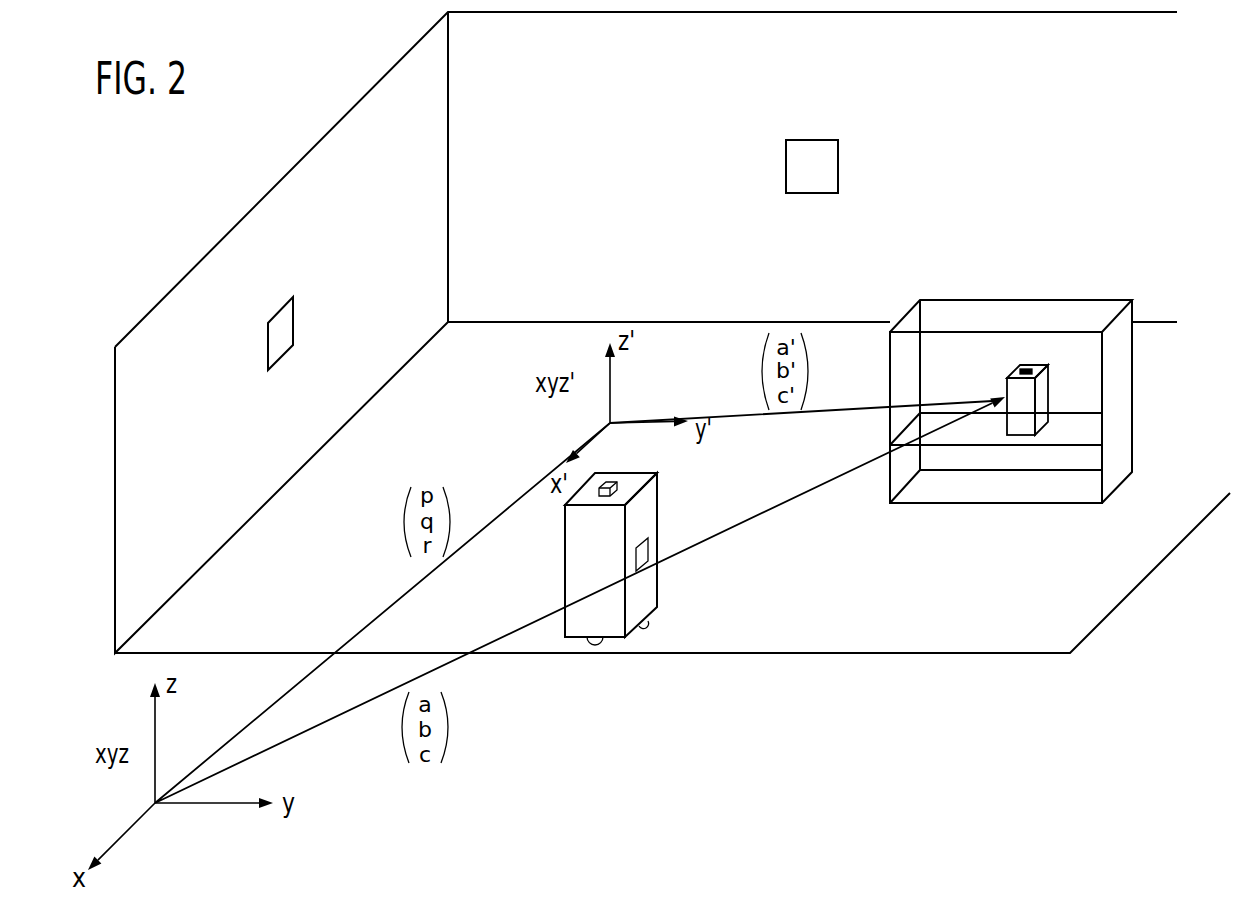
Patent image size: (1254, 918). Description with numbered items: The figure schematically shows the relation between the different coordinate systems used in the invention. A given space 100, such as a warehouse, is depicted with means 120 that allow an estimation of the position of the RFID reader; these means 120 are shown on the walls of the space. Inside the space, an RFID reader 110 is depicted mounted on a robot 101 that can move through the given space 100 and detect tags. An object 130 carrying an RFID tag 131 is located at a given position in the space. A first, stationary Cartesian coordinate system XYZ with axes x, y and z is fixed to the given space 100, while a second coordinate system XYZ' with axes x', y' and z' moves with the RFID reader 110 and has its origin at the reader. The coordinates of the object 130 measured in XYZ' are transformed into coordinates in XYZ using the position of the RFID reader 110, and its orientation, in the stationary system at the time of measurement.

The given space 100 is at (154, 240).
The robot 101 is at (652, 505).
The RFID reader 110 is at (611, 481).
The means for estimating the position of the RFID reader 120 is at (283, 318).
The object 130 is at (1027, 400).
The RFID tag 131 is at (1025, 367).